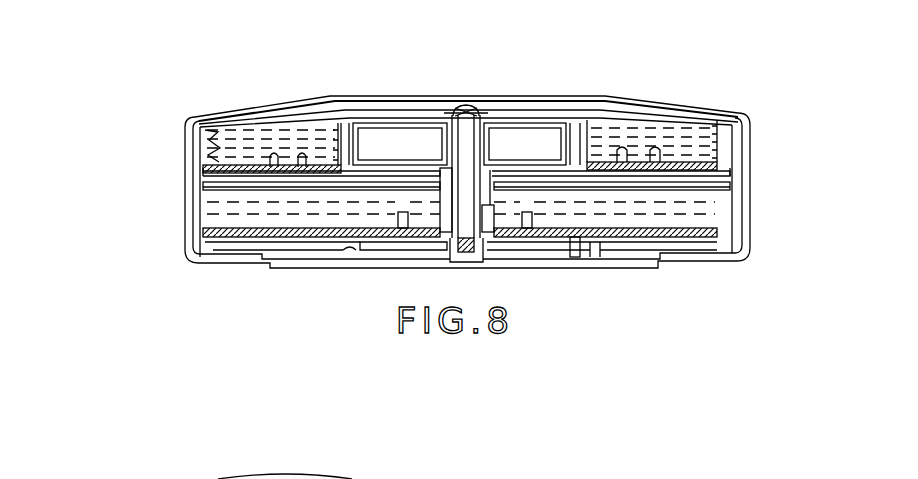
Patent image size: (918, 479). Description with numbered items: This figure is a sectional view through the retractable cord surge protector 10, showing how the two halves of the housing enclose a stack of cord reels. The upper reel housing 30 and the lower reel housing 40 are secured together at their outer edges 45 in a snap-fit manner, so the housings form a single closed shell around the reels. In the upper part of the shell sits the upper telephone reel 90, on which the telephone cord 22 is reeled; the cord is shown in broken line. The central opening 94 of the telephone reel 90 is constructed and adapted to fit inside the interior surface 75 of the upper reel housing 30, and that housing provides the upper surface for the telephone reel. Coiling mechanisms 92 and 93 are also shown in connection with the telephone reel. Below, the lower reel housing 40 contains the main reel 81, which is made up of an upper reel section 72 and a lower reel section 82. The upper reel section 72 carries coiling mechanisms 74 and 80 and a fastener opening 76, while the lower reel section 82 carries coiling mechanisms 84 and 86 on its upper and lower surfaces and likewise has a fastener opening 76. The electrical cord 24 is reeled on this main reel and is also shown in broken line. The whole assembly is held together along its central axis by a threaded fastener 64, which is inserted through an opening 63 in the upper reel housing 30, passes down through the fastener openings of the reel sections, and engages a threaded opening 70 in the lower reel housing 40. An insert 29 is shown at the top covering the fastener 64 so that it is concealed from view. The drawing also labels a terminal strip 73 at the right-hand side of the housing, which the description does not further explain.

The retractable cord surge protector 10 is at (176, 57).
The telephone cord 22 is at (714, 140).
The electrical cord 24 is at (742, 253).
The insert 29 is at (372, 93).
The upper reel housing 30 is at (184, 121).
The lower reel housing 40 is at (183, 222).
The outer edges 45 is at (748, 178).
The opening 63 is at (441, 112).
The threaded fastener 64 is at (481, 104).
The threaded opening 70 is at (482, 252).
The upper reel section 72 is at (215, 190).
The terminal strip 73 is at (737, 160).
The coiling mechanism 74 is at (402, 174).
The interior surface 75 is at (693, 125).
The fastener opening 76 is at (490, 176).
The coiling mechanism 80 is at (430, 207).
The main reel 81 is at (745, 222).
The lower reel section 82 is at (188, 245).
The coiling mechanism 84 is at (594, 242).
The coiling mechanism 86 is at (350, 248).
The upper telephone reel 90 is at (212, 174).
The coiling mechanism 92 is at (300, 152).
The coiling mechanism 93 is at (212, 166).
The central opening 94 is at (585, 160).